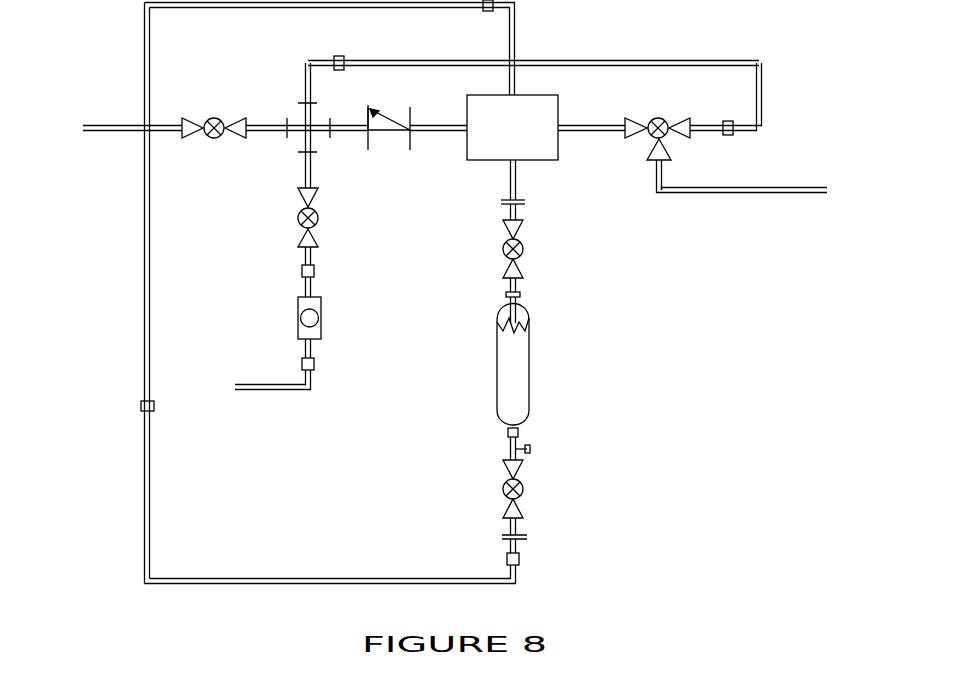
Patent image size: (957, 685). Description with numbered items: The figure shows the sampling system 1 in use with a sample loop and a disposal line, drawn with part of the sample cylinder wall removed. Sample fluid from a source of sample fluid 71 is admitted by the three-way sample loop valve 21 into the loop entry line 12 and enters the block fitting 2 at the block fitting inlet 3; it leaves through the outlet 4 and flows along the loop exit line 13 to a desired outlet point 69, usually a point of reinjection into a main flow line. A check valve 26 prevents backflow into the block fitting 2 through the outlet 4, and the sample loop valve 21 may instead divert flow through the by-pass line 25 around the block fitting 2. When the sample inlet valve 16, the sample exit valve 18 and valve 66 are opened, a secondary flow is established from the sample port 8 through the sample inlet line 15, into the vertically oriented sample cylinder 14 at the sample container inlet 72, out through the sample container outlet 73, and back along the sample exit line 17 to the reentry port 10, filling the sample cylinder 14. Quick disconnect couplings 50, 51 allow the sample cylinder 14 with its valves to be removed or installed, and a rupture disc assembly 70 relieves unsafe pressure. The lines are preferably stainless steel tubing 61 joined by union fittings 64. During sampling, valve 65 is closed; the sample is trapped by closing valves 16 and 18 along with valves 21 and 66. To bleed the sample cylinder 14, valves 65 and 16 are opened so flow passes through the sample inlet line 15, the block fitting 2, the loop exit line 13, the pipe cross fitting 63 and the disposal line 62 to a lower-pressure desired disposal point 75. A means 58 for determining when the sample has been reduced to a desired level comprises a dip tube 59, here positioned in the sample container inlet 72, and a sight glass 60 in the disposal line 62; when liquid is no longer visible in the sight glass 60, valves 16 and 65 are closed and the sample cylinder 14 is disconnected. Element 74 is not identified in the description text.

The system 1 is at (632, 278).
The block fitting 2 is at (536, 93).
The block fitting inlet 3 is at (560, 125).
The outlet 4 is at (466, 123).
The sample port 8 is at (520, 163).
The reentry port 10 is at (512, 94).
The loop entry line 12 is at (578, 133).
The loop exit line 13 is at (152, 133).
The sample cylinder 14 is at (529, 381).
The sample inlet line 15 is at (522, 200).
The sample inlet valve 16 is at (503, 250).
The sample exit line 17 is at (512, 584).
The sample exit valve 18 is at (503, 490).
The sample loop valve 21 is at (662, 118).
The by-pass line 25 is at (565, 61).
The check valve 26 is at (410, 140).
The quick disconnect coupling 50 is at (502, 537).
The quick disconnect coupling 51 is at (500, 202).
The means for determining when the quantity of sample fluid is reduced to a desired 58 is at (504, 313).
The dip tube 59 is at (505, 305).
The sight glass 60 is at (298, 318).
The stainless steel tubing 61 is at (152, 272).
The disposal line 62 is at (303, 172).
The pipe cross fitting 63 is at (311, 121).
The union fitting 64 is at (340, 56).
The valve 65 is at (298, 218).
The valve 66 is at (214, 117).
The desired outlet point 69 is at (83, 130).
The rupture disc assembly 70 is at (528, 450).
The source of sample fluid 71 is at (785, 188).
The sample container inlet 72 is at (518, 293).
The sample container outlet 73 is at (518, 432).
The filter 74 is at (521, 323).
The desired disposal point 75 is at (238, 387).